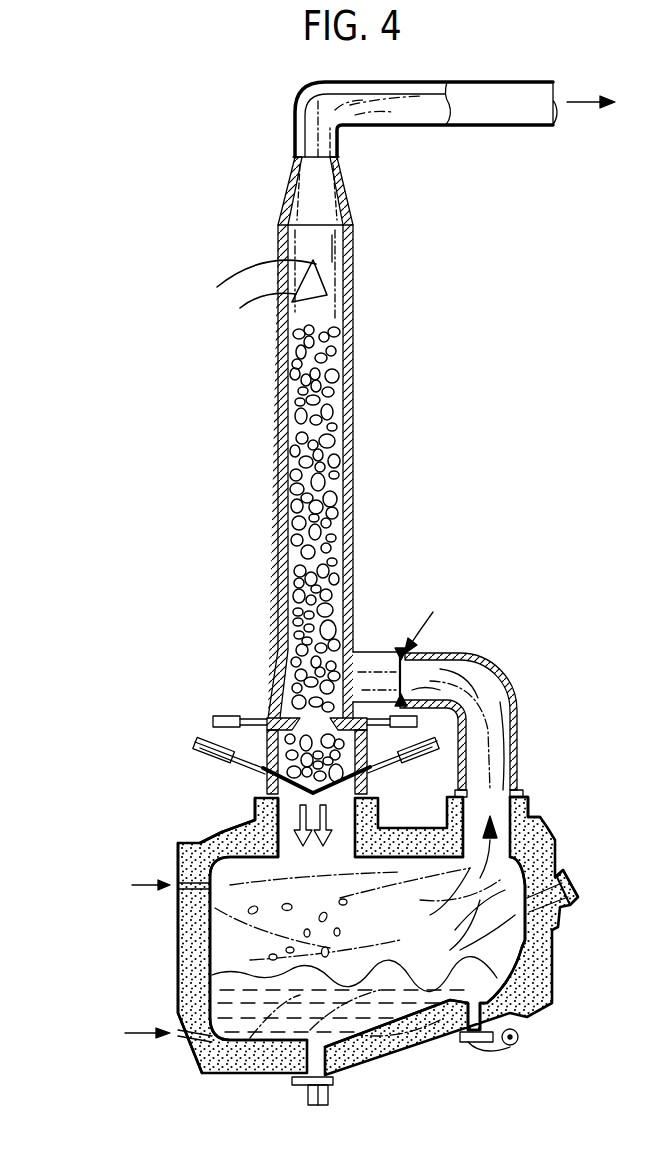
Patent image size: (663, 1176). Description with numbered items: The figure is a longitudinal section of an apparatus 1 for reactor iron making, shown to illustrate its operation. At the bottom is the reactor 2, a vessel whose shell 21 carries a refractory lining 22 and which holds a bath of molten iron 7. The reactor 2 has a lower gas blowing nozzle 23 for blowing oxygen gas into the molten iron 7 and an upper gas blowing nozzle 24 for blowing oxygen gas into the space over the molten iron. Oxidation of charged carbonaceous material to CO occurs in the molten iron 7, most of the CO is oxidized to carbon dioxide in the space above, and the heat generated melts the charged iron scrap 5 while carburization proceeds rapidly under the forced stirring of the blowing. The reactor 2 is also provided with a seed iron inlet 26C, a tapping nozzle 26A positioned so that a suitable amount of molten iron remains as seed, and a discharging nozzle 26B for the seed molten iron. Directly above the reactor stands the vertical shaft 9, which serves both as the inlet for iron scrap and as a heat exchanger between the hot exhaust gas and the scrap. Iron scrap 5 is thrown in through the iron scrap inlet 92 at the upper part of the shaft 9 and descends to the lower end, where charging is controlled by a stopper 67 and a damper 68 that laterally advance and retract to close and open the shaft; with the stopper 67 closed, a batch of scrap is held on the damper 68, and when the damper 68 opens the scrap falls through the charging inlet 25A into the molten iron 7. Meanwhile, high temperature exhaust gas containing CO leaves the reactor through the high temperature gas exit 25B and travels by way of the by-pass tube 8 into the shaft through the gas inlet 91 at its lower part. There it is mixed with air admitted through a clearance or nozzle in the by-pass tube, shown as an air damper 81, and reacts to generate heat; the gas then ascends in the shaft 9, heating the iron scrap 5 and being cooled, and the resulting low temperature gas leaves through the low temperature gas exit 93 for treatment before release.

The gasification apparatus 1 is at (238, 625).
The reactor 2 is at (379, 940).
The iron scrap 5 is at (300, 430).
The molten iron 7 is at (350, 998).
The by-pass tube 8 is at (500, 680).
The shaft 9 is at (356, 357).
The outer shell 21 is at (178, 925).
The refractory lining 22 is at (190, 965).
The lower gas blowing nozzle 23 is at (185, 1032).
The upper gas blowing nozzle 24 is at (178, 884).
The charging inlet 25A is at (303, 843).
The high temperature gas exit 25B is at (495, 845).
The tapping nozzle 26A is at (470, 1045).
The discharging nozzle 26B is at (300, 1086).
The seed iron inlet 26C is at (545, 897).
The stopper 67 is at (268, 720).
The damper 68 is at (255, 772).
The air damper 81 is at (438, 618).
The gas inlet 91 is at (365, 682).
The iron scrap inlet 92 is at (283, 250).
The low temperature gas exit 93 is at (480, 100).